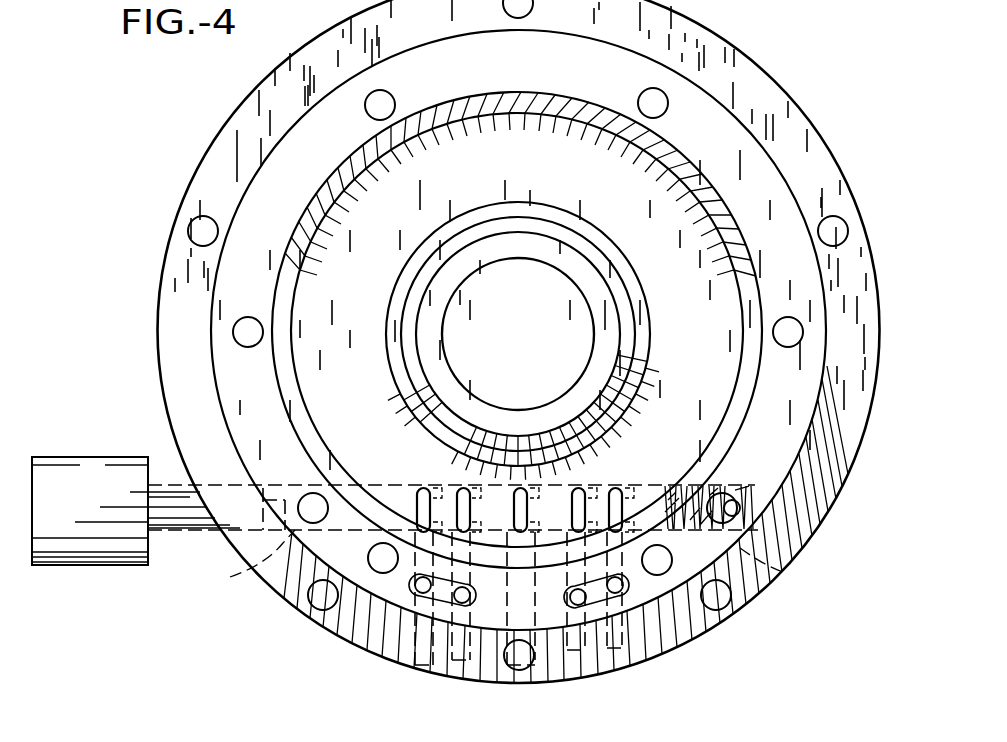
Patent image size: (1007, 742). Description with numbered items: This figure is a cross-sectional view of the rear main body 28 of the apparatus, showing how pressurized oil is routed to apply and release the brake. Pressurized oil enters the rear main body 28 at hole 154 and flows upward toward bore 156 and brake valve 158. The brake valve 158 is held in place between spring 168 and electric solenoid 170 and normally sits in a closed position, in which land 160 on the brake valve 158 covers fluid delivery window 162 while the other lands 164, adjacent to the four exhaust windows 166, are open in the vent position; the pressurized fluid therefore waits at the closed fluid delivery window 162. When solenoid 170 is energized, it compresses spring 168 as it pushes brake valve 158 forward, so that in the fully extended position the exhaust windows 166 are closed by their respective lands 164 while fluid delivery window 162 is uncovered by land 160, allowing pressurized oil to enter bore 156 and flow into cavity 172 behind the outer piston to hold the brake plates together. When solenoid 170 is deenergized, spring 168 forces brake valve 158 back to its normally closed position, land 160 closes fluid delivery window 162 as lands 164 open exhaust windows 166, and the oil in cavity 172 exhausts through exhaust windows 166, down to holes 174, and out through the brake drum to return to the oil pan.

The rear main body 28 is at (820, 140).
The hole 154 is at (520, 662).
The bore 156 is at (783, 572).
The brake valve 158 is at (240, 577).
The land 160 is at (567, 468).
The fluid delivery window 162 is at (533, 497).
The lands 164 is at (436, 494).
The exhaust windows 166 is at (418, 510).
The spring 168 is at (755, 488).
The electric solenoid 170 is at (105, 457).
The cavity 172 is at (515, 157).
The holes 174 is at (620, 590).